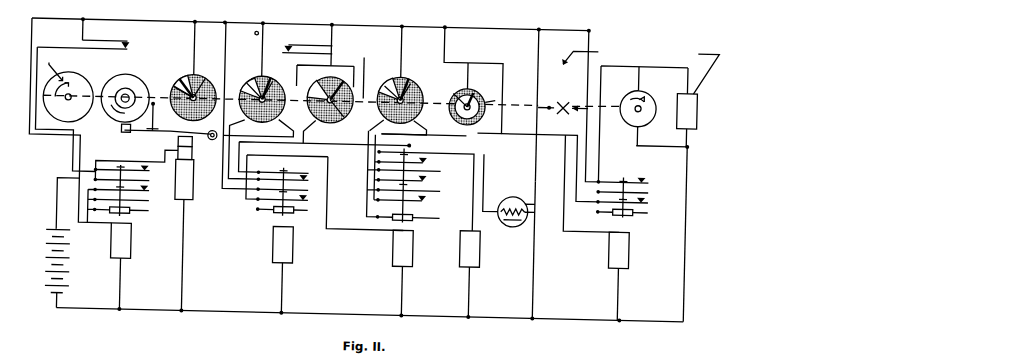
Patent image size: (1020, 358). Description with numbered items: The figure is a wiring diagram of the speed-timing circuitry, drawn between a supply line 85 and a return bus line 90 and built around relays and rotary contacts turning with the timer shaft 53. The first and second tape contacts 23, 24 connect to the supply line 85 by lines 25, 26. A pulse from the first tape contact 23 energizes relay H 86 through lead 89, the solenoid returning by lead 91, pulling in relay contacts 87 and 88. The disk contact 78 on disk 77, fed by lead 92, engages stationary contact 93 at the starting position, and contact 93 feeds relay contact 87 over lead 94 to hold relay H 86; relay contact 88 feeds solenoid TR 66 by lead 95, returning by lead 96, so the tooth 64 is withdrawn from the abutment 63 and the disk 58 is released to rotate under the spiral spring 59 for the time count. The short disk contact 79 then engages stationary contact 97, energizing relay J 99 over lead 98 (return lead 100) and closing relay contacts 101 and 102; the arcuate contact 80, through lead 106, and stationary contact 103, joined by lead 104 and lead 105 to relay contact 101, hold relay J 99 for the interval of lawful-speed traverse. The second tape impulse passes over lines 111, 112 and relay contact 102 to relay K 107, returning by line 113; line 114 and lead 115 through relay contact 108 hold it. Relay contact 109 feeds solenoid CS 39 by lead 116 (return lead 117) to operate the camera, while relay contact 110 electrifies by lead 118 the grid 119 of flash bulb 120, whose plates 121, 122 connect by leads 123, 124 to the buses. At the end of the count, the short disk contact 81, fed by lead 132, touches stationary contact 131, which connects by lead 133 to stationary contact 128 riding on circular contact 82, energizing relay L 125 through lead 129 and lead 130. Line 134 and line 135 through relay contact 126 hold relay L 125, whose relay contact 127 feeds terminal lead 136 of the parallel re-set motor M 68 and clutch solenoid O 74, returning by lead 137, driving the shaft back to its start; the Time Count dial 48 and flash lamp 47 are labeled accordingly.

The first tape contact 23 is at (94, 100).
The second tape contact 24 is at (305, 40).
The line 25 is at (83, 29).
The line 26 is at (332, 32).
The solenoid CS 39 is at (481, 252).
The flash lamp 47 is at (514, 216).
The time count dial 48 is at (58, 108).
The timer shaft 53 is at (368, 69).
The disk 58 is at (124, 79).
The spiral spring 59 is at (132, 88).
The shouldered abutment 63 is at (123, 127).
The tooth 64 is at (167, 118).
The solenoid TR 66 is at (194, 168).
The re-set motor M 68 is at (648, 106).
The clutch solenoid O 74 is at (694, 108).
The disk 77 is at (330, 101).
The contact T1 78 is at (187, 78).
The contact T2 79 is at (270, 80).
The arcuate contact T3 80 is at (350, 84).
The short contact S2 81 is at (396, 75).
The circular contact 82 is at (498, 90).
The supply line 85 is at (158, 18).
The relay H 86 is at (129, 243).
The contact H1 87 is at (127, 194).
The contact H2 88 is at (130, 175).
The lead 89 is at (82, 141).
The bus line 90 is at (165, 309).
The lead 91 is at (126, 293).
The lead 92 is at (195, 36).
The stationary contact 93 is at (183, 88).
The lead 94 is at (118, 158).
The lead 95 is at (148, 158).
The lead 96 is at (191, 254).
The stationary contact 97 is at (262, 80).
The lead 98 is at (228, 160).
The relay J 99 is at (292, 247).
The lead 100 is at (290, 291).
The contact J1 101 is at (296, 167).
The contact J2 102 is at (295, 193).
The stationary contact 103 is at (325, 94).
The lead 104 is at (315, 135).
The lead 105 is at (215, 136).
The lead 106 is at (258, 128).
The relay K 107 is at (415, 251).
The contact K1 108 is at (415, 186).
The contact K2 109 is at (415, 189).
The contact CS1 110 is at (414, 169).
The line 111 is at (345, 144).
The line 112 is at (345, 225).
The line 113 is at (408, 288).
The line 114 is at (445, 34).
The lead 115 is at (382, 209).
The lead 116 is at (488, 166).
The lead 117 is at (475, 288).
The lead 118 is at (478, 145).
The grid 119 is at (544, 213).
The flash bulb 120 is at (516, 216).
The plate 121 is at (542, 199).
The plate 122 is at (507, 209).
The lead 123 is at (539, 174).
The lead 124 is at (540, 283).
The relay L 125 is at (629, 253).
The contact L1 126 is at (635, 199).
The contact L2 127 is at (632, 176).
The stationary contact 128 is at (488, 84).
The lead 129 is at (567, 147).
The lead 130 is at (625, 287).
The stationary contact 131 is at (408, 74).
The lead 132 is at (402, 32).
The lead 133 is at (487, 97).
The line 134 is at (590, 160).
The line 135 is at (578, 124).
The terminal lead 136 is at (602, 76).
The lead 137 is at (690, 213).